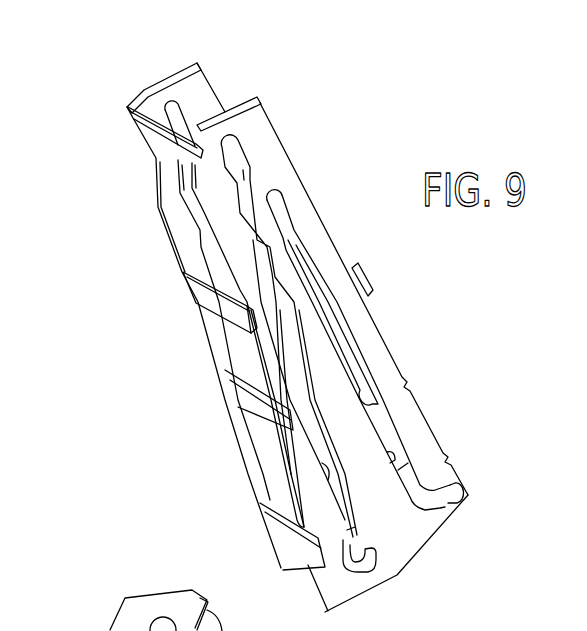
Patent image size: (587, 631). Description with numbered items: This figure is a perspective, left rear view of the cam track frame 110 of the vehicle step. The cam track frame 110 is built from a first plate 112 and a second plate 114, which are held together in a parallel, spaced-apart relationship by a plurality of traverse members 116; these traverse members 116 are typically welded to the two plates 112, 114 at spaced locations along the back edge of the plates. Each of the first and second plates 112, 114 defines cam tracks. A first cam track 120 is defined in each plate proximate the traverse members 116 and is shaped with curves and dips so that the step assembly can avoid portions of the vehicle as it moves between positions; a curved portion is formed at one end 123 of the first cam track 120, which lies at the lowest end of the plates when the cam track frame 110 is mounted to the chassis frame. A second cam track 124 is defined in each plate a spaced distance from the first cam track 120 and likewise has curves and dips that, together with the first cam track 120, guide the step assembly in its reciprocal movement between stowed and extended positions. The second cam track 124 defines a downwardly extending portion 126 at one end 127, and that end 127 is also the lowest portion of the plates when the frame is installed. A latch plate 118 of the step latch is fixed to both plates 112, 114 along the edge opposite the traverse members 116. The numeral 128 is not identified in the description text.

The cam track frame 110 is at (66, 89).
The first plate 112 is at (242, 122).
The second plate 114 is at (172, 78).
The traverse members 116 is at (155, 134).
The latch plate 118 is at (367, 278).
The first cam track 120 is at (323, 462).
The end of the first cam track 123 is at (352, 584).
The second cam track 124 is at (363, 392).
The downwardly extending portion 126 is at (464, 499).
The end of the second cam track 127 is at (468, 526).
The hook 128 is at (372, 572).